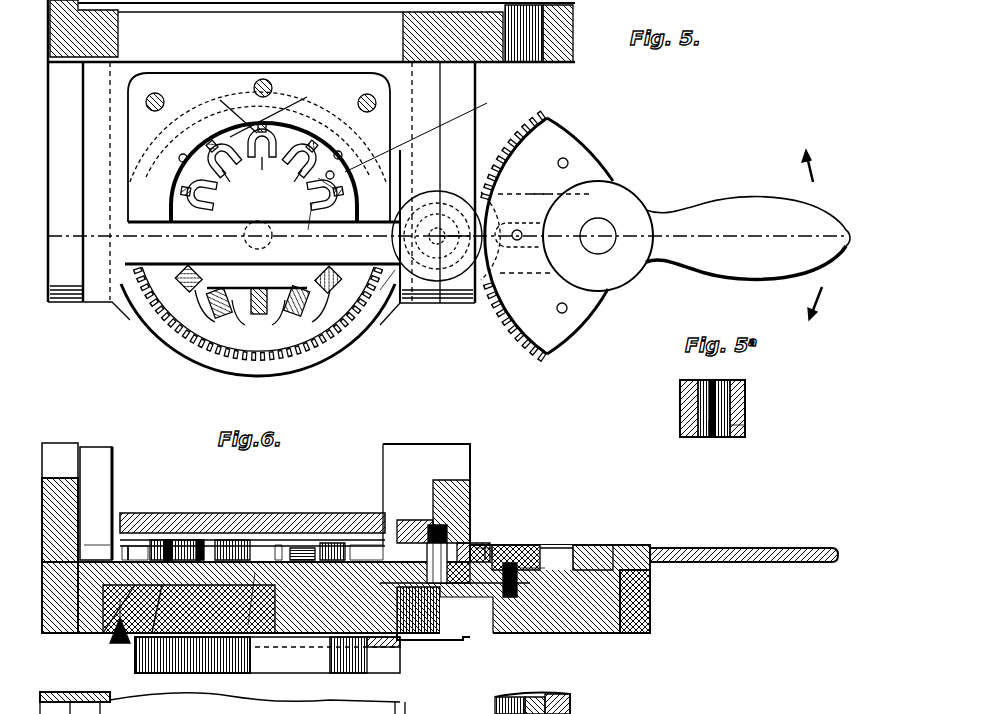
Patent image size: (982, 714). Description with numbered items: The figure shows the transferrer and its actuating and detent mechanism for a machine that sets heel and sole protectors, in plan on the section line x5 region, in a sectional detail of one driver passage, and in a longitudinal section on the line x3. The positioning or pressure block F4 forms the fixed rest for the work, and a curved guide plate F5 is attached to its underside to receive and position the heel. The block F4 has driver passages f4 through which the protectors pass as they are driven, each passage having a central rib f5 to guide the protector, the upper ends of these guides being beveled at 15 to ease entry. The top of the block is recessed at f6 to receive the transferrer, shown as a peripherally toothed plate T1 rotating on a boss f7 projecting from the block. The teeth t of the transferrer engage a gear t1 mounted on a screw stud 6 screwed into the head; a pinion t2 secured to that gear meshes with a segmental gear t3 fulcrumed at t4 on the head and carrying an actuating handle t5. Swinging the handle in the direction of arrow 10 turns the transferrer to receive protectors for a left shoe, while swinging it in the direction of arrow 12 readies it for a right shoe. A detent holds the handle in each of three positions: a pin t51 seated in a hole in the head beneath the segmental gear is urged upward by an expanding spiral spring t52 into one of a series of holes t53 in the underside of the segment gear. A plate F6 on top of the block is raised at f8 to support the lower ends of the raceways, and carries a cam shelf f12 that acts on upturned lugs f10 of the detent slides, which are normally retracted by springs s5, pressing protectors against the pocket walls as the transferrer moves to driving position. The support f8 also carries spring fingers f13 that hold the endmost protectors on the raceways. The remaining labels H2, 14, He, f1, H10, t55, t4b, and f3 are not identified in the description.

In FIG. 5, the type-writer frame H2 is at (114, 29).
In FIG. 6, the type-writer frame H2 is at (115, 447).
In FIG. 5, the plate F6 is at (197, 75).
In FIG. 5, the transferrer T1 is at (237, 340).
In FIG. 6, the transferrer T1 is at (128, 642).
In FIG. 5, the teeth t is at (283, 360).
In FIG. 6, the teeth t is at (128, 540).
In FIG. 5, the fastening screws 14 is at (366, 138).
In FIG. 5, the support f8 is at (256, 188).
In FIG. 6, the support f8 is at (340, 540).
In FIG. 5, the frame bracket He is at (264, 226).
In FIG. 6, the frame bracket He is at (652, 620).
In FIG. 5, the central rib f5 is at (253, 160).
In FIG. 5A, the central rib f5 is at (710, 437).
In FIG. 6, the central rib f5 is at (185, 540).
In FIG. 5, the type-bar link f1 is at (280, 160).
In FIG. 5, the section line x5 is at (328, 193).
In FIG. 5, the fulcrum t4 is at (309, 230).
In FIG. 6, the fulcrum t4 is at (588, 547).
In FIG. 5, the spring fingers f13 is at (203, 305).
In FIG. 5, the frame side plate H10 is at (470, 305).
In FIG. 6, the frame side plate H10 is at (60, 478).
In FIG. 5, the gear t1 is at (420, 304).
In FIG. 6, the gear t1 is at (510, 562).
In FIG. 5, the pinion t2 is at (440, 200).
In FIG. 6, the pinion t2 is at (482, 545).
In FIG. 5, the cam shelf f12 is at (425, 128).
In FIG. 6, the cam shelf f12 is at (330, 500).
In FIG. 5, the segmental gear t3 is at (551, 128).
In FIG. 6, the segmental gear t3 is at (516, 531).
In FIG. 5, the screw stud 6 is at (551, 185).
In FIG. 5, the guide pin t55 is at (569, 163).
In FIG. 5, the holes t53 is at (523, 232).
In FIG. 5, the hub t4b is at (602, 228).
In FIG. 5, the actuating handle t5 is at (777, 272).
In FIG. 6, the actuating handle t5 is at (762, 548).
In FIG. 5, the section line x3 is at (437, 231).
In FIG. 5, the arrow 10 is at (815, 166).
In FIG. 5, the arrow 12 is at (821, 303).
In FIG. 5, the segment plate f3 is at (230, 107).
In FIG. 5, the upturned lugs f10 is at (281, 109).
In FIG. 6, the upturned lugs f10 is at (160, 540).
In FIG. 5, the springs s5 is at (341, 106).
In FIG. 6, the springs s5 is at (300, 545).
In FIG. 5A, the positioning or pressure block F4 is at (680, 408).
In FIG. 6, the positioning or pressure block F4 is at (110, 638).
In FIG. 5A, the bevel 15 is at (712, 395).
In FIG. 5A, the driver passages f4 is at (748, 424).
In FIG. 6, the recess f6 is at (100, 556).
In FIG. 6, the boss f7 is at (248, 625).
In FIG. 6, the pin t51 is at (552, 547).
In FIG. 6, the expanding spiral spring t52 is at (445, 618).
In FIG. 6, the curved guide plate F5 is at (360, 666).